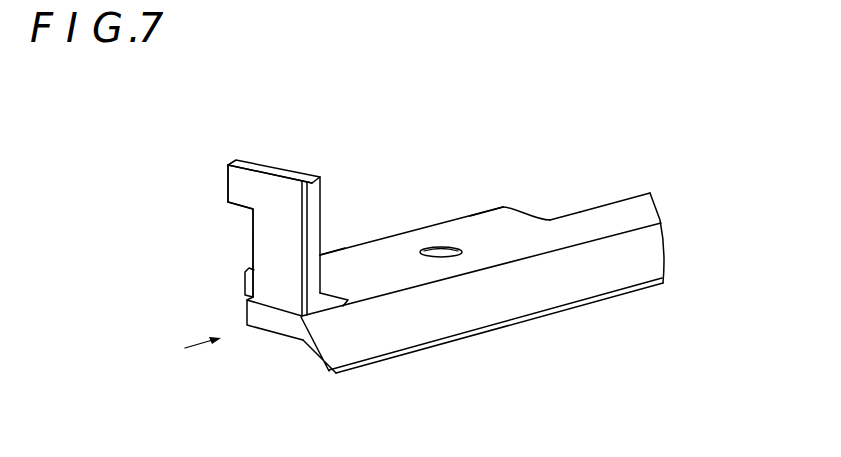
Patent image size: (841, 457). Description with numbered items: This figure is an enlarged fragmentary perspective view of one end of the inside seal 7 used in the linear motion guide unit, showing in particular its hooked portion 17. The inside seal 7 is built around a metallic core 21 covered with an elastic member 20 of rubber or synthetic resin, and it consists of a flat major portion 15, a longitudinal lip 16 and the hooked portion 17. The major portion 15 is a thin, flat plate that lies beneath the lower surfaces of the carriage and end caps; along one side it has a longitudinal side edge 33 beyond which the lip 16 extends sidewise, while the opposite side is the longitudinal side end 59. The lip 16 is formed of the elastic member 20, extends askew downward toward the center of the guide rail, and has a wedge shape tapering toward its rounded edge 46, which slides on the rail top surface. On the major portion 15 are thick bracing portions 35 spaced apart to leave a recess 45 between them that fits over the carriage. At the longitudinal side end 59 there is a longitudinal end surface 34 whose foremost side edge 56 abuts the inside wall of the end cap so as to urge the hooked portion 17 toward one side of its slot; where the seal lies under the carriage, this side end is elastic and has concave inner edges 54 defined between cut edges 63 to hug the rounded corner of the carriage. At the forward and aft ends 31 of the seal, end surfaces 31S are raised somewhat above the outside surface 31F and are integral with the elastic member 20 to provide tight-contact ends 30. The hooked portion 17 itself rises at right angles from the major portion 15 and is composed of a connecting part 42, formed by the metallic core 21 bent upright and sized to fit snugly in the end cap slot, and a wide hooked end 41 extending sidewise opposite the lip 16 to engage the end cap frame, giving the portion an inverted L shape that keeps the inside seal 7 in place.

The inside seal 7 is at (470, 194).
The major portion 15 is at (517, 238).
The longitudinal lip 16 is at (445, 329).
The hooked portion 17 is at (277, 200).
The elastic member 20 is at (273, 250).
The metallic core 21 is at (318, 208).
The tight-contact end 30 is at (292, 325).
The forward and aft ends 31 is at (304, 326).
The outside surface 31F is at (285, 217).
The end surface 31S is at (268, 312).
The longitudinal side edge 33 is at (543, 255).
The longitudinal end surface 34 is at (346, 248).
The thick bracing portion 35 is at (391, 249).
The hooked end 41 is at (237, 185).
The connecting part 42 is at (273, 232).
The recess 45 is at (628, 198).
The edge 46 is at (498, 332).
The concave inner edge 54 is at (540, 218).
The foremost side edge 56 is at (482, 210).
The longitudinal side end 59 is at (435, 224).
The cut edge 63 is at (521, 212).